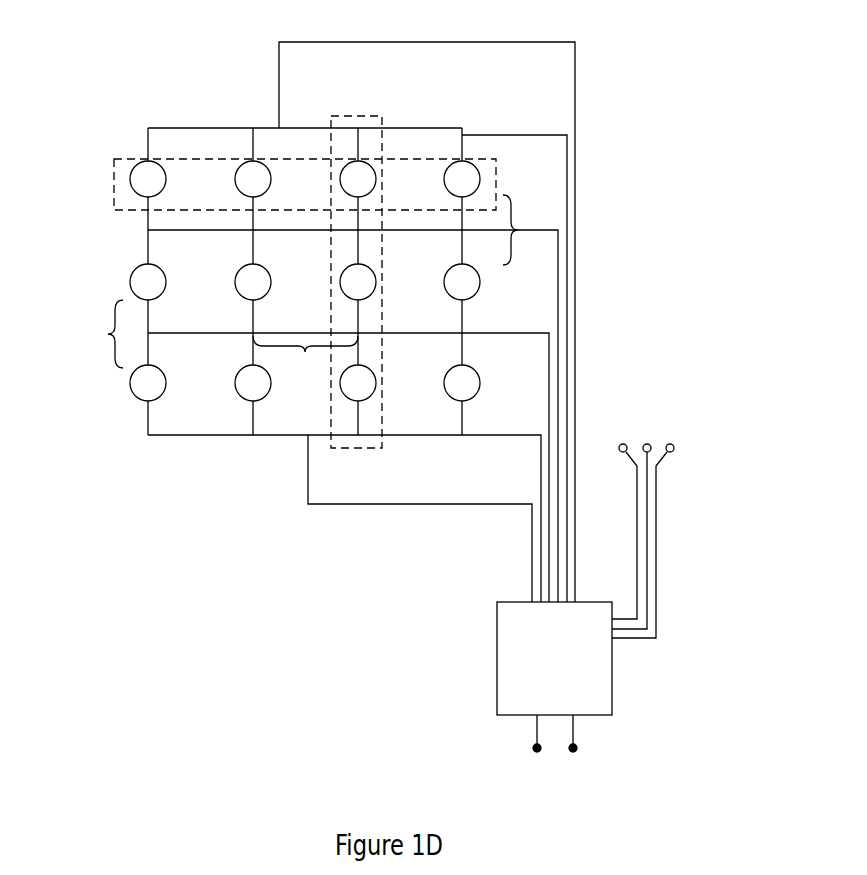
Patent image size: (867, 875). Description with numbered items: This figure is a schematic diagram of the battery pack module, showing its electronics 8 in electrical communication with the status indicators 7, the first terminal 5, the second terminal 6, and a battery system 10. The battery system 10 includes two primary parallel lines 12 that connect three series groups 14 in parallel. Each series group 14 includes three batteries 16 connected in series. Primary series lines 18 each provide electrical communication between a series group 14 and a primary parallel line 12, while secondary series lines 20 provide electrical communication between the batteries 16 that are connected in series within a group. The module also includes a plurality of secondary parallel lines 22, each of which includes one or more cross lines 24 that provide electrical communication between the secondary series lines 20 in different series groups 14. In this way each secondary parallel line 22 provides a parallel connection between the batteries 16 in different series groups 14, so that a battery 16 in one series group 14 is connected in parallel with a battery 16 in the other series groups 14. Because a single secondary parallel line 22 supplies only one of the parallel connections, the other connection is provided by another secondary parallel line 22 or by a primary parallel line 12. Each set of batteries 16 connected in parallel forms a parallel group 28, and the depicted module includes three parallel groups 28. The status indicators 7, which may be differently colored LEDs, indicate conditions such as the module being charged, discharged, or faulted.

The battery system 10 is at (113, 73).
The primary parallel line 12 is at (218, 125).
The series group 14 is at (360, 112).
The battery 16 is at (447, 186).
The primary series line 18 is at (148, 135).
The secondary series line 20 is at (315, 281).
The secondary parallel line 22 is at (170, 233).
The cross line 24 is at (305, 361).
The parallel group 28 is at (497, 161).
The electronics 8 is at (497, 690).
The status indicator 7 is at (622, 442).
The first terminal 5 is at (535, 756).
The second terminal 6 is at (572, 756).